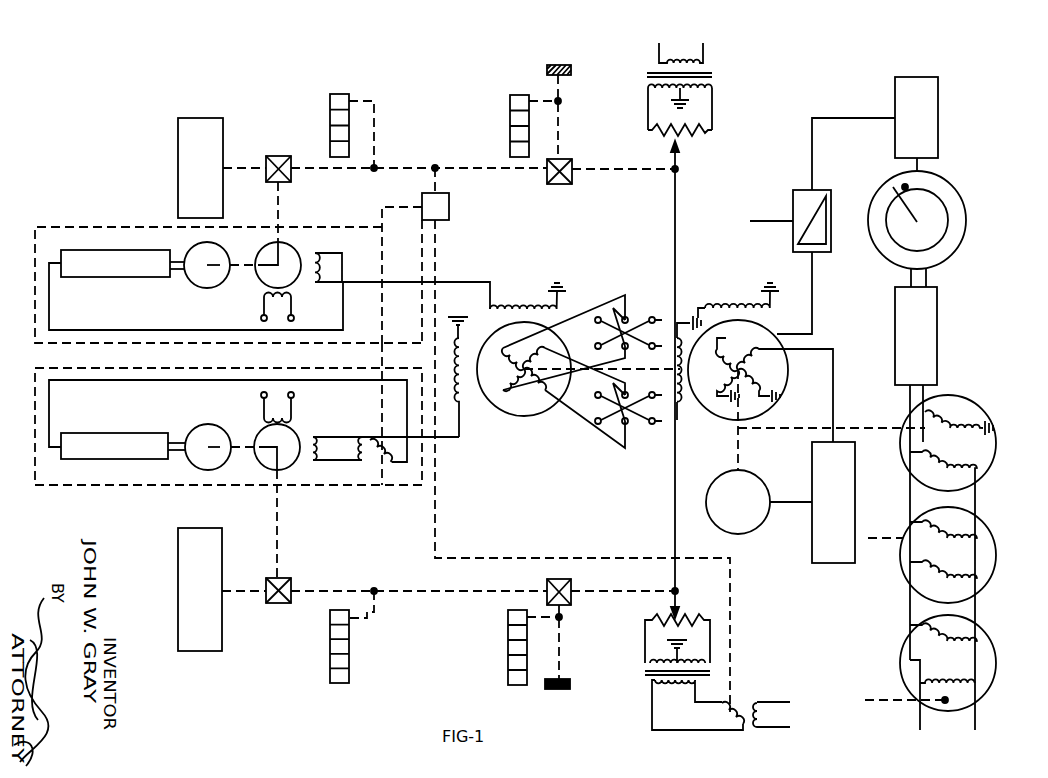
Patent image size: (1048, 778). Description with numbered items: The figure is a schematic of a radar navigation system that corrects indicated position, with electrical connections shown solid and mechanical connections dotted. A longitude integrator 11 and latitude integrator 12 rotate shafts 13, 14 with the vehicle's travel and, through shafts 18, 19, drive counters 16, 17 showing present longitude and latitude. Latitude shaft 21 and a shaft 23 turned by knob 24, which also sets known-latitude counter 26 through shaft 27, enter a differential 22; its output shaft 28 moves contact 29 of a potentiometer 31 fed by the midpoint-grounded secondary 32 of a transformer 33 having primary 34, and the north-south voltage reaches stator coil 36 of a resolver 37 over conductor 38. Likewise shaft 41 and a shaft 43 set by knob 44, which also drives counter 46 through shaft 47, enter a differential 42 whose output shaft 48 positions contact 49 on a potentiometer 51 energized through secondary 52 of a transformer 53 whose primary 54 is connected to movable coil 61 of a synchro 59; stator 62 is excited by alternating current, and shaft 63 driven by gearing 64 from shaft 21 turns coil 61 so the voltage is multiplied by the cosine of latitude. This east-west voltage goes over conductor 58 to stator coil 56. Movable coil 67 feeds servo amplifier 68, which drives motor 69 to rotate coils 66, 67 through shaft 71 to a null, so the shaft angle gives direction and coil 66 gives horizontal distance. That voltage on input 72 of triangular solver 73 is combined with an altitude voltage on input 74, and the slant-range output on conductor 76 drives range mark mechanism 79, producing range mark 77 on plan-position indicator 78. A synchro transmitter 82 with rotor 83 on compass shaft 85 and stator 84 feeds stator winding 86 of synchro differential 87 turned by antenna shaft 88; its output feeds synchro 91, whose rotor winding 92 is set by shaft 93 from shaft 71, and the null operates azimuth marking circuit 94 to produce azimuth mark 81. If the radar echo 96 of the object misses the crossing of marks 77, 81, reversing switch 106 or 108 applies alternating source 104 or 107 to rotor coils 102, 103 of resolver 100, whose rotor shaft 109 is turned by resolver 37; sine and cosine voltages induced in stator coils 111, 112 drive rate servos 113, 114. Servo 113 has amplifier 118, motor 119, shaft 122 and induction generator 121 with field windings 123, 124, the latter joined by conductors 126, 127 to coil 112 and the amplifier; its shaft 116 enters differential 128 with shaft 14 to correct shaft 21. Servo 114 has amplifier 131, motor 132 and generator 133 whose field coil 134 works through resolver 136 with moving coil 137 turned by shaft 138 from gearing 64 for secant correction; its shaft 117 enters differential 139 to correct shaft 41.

The longitude integrator mechanism 11 is at (206, 651).
The latitude integrator mechanism 12 is at (178, 168).
The shaft 13 is at (239, 593).
The shaft 14 is at (243, 164).
The longitude counter 16 is at (349, 667).
The latitude counter 17 is at (343, 94).
The shaft 18 is at (378, 619).
The shaft 19 is at (376, 128).
The latitude shaft 21 is at (411, 165).
The differential 22 is at (567, 184).
The shaft 23 is at (562, 125).
The knob 24 is at (571, 66).
The known-latitude counter 26 is at (508, 94).
The shaft 27 is at (548, 100).
The shaft 28 is at (582, 167).
The movable contact 29 is at (682, 156).
The potentiometer 31 is at (704, 138).
The transformer secondary 32 is at (650, 91).
The transformer 33 is at (765, 84).
The transformer primary 34 is at (647, 74).
The stator coil 36 is at (733, 303).
The resolver 37 is at (822, 388).
The conductor 38 is at (675, 236).
The shaft 41 is at (495, 590).
The differential 42 is at (547, 581).
The shaft 43 is at (561, 638).
The knob 44 is at (571, 684).
The known-longitude counter 46 is at (508, 647).
The shaft 47 is at (549, 623).
The shaft 48 is at (652, 590).
The movable contact 49 is at (687, 601).
The potentiometer 51 is at (696, 620).
The transformer secondary 52 is at (655, 661).
The transformer 53 is at (726, 695).
The transformer primary 54 is at (686, 686).
The stator coil 56 is at (674, 384).
The conductor 58 is at (675, 494).
The synchro 59 is at (765, 691).
The movable coil 61 is at (730, 718).
The stator 62 is at (760, 718).
The shaft 63 is at (560, 557).
The gearing 64 is at (449, 207).
The movable coil 66 is at (774, 389).
The movable coil 67 is at (750, 364).
The servo amplifier 68 is at (855, 496).
The motor 69 is at (752, 526).
The shaft 71 is at (736, 450).
The input 72 is at (812, 294).
The triangular solver 73 is at (818, 192).
The input 74 is at (758, 222).
The conductor 76 is at (838, 121).
The range mark 77 is at (930, 246).
The plan-position indicator 78 is at (868, 218).
The range mark mechanism 79 is at (918, 77).
The azimuth mark 81 is at (892, 189).
The synchro transmitter 82 is at (996, 664).
The single phase rotor 83 is at (944, 679).
The three phase stator output 84 is at (950, 643).
The compass shaft 85 is at (906, 702).
The three phase stator winding 86 is at (943, 584).
The synchro differential 87 is at (996, 556).
The antenna shaft 88 is at (872, 540).
The synchro 91 is at (996, 445).
The three phase rotor winding 92 is at (959, 417).
The shaft 93 is at (781, 428).
The azimuth marking circuit 94 is at (895, 340).
The radar display of recognizable object 96 is at (908, 187).
The resolver 100 is at (483, 310).
The rotor coil 102 is at (514, 385).
The rotor coil 103 is at (511, 360).
The alternating current source 104 is at (678, 413).
The reversing switch 106 is at (668, 446).
The alternating current source 107 is at (657, 318).
The reversing switch 108 is at (620, 281).
The rotor shaft 109 is at (626, 371).
The stator coil 111 is at (467, 400).
The stator coil 112 is at (526, 300).
The rate servo 113 is at (296, 227).
The rate servo 114 is at (124, 367).
The shaft 116 is at (275, 207).
The shaft 117 is at (275, 549).
The amplifier 118 is at (112, 278).
The motor 119 is at (218, 250).
The induction generator 121 is at (292, 253).
The shaft 122 is at (250, 268).
The field winding 123 is at (293, 301).
The field winding 124 is at (318, 266).
The conductor 126 is at (397, 282).
The conductor 127 is at (102, 330).
The differential 128 is at (278, 156).
The amplifier 131 is at (110, 432).
The motor 132 is at (207, 425).
The induction generator 133 is at (260, 463).
The field coil 134 is at (313, 437).
The resolver 136 is at (376, 431).
The moving coil 137 is at (380, 458).
The shaft 138 is at (380, 357).
The differential 139 is at (289, 581).